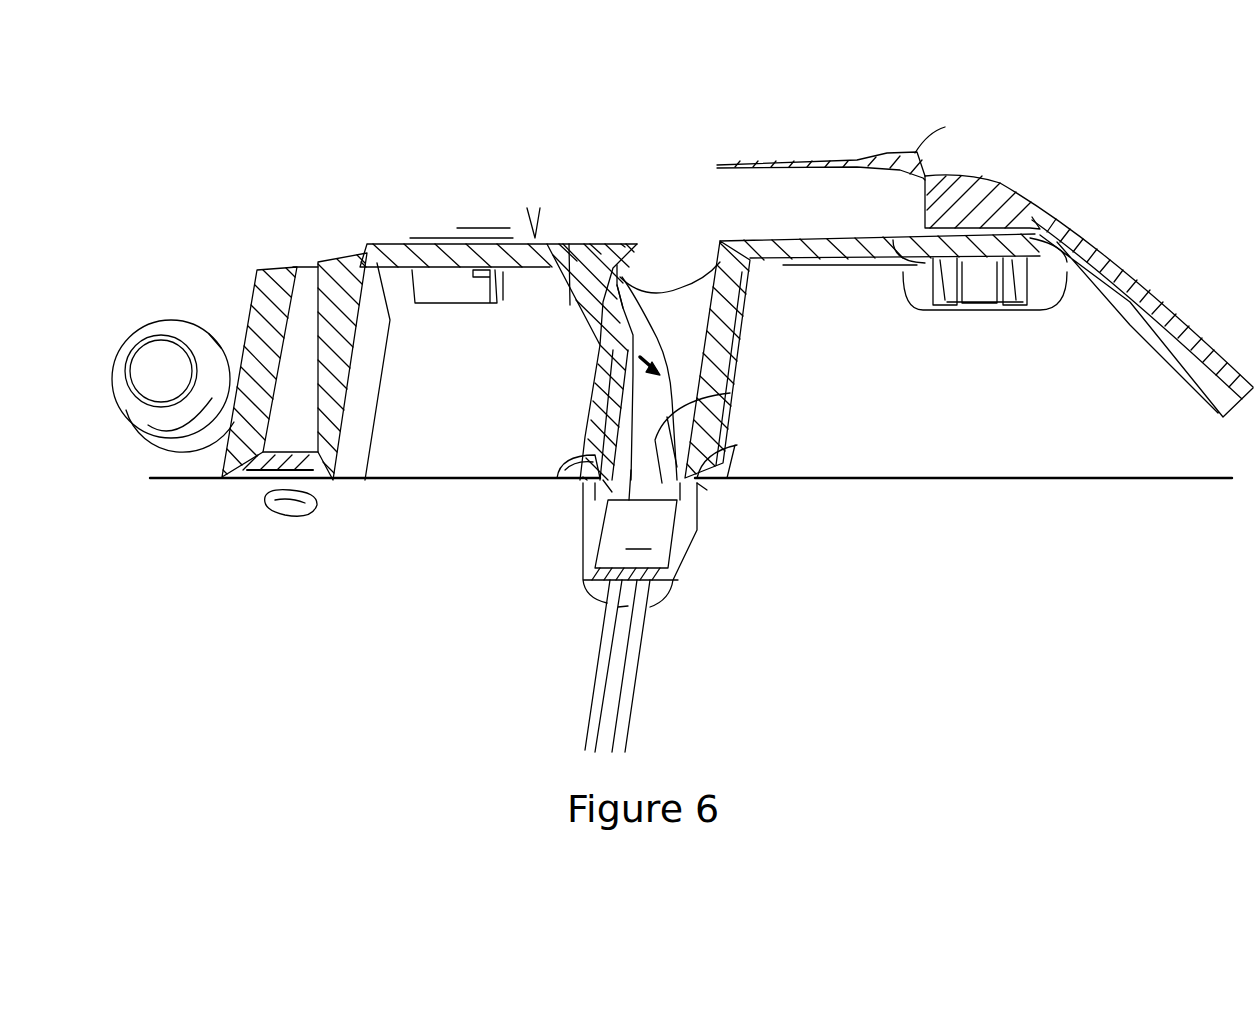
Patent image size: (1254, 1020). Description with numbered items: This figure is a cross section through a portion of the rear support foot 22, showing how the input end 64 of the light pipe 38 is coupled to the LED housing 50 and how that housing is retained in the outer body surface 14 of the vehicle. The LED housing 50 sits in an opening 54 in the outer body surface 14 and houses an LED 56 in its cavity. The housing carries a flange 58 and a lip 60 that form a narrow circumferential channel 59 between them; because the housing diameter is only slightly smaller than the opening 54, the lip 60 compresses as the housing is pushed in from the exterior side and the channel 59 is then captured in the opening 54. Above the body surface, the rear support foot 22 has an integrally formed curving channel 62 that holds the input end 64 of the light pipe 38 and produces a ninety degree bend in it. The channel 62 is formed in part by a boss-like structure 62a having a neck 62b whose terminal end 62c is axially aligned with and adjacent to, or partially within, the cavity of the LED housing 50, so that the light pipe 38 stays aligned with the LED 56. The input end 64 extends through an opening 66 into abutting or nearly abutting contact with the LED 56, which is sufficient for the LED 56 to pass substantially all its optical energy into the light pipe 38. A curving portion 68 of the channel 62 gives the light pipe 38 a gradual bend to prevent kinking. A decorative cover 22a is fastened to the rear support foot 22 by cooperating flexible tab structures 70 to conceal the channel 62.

The outer body surface 14 is at (900, 477).
The rear support foot 22 is at (1035, 172).
The decorative cover 22a is at (905, 160).
The light pipe 38 is at (600, 360).
The LED housing 50 is at (710, 530).
The opening 54 is at (593, 457).
The LED 56 is at (636, 534).
The flange 58 is at (727, 463).
The channel 59 is at (602, 482).
The lip 60 is at (707, 490).
The channel 62 is at (695, 295).
The boss-like structure 62a is at (717, 379).
The neck 62b is at (603, 420).
The terminal end 62c is at (612, 490).
The input end 64 is at (645, 430).
The opening 66 is at (713, 397).
The curving portion 68 is at (569, 244).
The flexible tab structures 70 is at (993, 312).